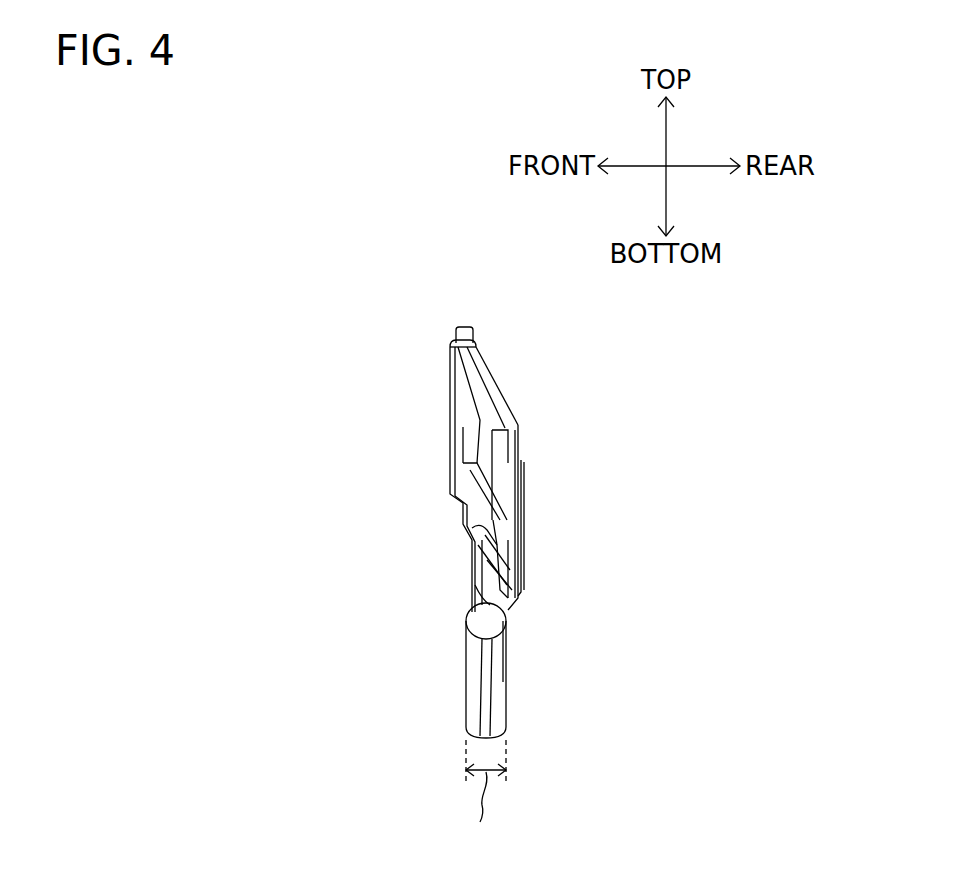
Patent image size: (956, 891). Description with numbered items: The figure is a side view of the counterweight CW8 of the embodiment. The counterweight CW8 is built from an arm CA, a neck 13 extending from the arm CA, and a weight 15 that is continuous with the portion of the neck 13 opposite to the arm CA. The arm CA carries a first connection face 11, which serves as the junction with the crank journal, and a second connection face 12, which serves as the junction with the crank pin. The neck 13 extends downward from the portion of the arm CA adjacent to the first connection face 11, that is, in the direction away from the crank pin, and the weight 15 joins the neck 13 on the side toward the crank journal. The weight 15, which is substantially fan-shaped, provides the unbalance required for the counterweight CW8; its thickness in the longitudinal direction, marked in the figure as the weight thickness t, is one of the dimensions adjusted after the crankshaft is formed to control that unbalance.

The counterweight CW8 is at (444, 330).
The second connection face 12 is at (450, 409).
The arm CA is at (495, 397).
The first connection face 11 is at (520, 531).
The neck 13 is at (473, 572).
The weight 15 is at (497, 680).